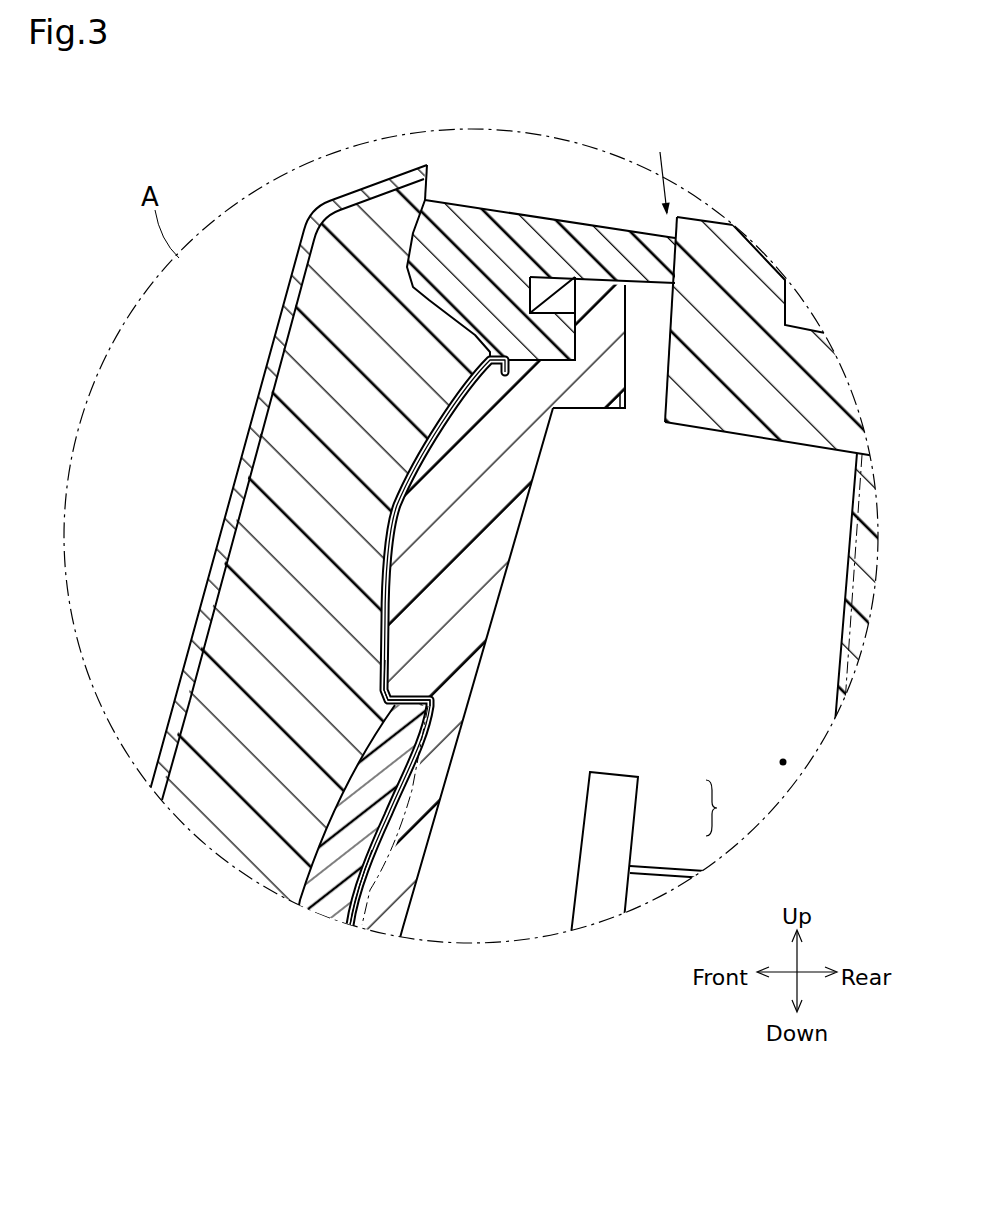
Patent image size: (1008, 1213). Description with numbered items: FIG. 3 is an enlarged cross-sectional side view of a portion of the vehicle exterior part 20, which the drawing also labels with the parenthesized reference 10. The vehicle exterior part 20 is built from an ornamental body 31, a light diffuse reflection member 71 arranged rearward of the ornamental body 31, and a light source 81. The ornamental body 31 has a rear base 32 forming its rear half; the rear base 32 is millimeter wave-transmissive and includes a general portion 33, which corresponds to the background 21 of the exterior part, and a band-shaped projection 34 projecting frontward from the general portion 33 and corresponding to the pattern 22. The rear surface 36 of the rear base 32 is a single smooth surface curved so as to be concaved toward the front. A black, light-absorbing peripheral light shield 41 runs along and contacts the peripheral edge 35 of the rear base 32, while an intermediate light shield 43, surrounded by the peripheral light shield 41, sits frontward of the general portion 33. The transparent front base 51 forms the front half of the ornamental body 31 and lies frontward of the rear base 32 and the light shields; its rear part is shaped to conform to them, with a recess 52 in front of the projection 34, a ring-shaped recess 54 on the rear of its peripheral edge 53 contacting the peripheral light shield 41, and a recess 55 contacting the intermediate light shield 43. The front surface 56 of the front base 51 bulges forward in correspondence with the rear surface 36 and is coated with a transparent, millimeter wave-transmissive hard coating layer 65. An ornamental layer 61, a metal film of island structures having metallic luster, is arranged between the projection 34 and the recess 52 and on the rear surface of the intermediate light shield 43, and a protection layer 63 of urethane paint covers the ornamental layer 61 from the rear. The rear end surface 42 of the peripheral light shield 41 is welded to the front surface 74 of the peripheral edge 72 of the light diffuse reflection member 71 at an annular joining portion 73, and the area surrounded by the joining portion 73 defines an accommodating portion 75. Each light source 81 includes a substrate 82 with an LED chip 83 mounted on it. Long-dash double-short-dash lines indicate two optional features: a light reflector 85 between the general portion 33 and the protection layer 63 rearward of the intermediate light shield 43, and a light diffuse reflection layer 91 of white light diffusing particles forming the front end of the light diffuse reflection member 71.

The vehicle door 10 is at (471, 536).
The vehicle exterior part 20 is at (247, 238).
The background 21 is at (390, 925).
The pattern 22 is at (385, 663).
The ornamental body 31 is at (518, 604).
The rear base 32 is at (487, 645).
The general portion 33 is at (380, 934).
The projection 34 is at (351, 681).
The peripheral edge 35 is at (580, 293).
The rear surface 36 is at (415, 920).
The peripheral light shield 41 is at (510, 228).
The rear end surface 42 is at (681, 260).
The intermediate light shield 43 is at (330, 900).
The front base 51 is at (248, 497).
The recess 52 is at (372, 592).
The peripheral edge 53 is at (395, 185).
The ring-shaped recess 54 is at (420, 222).
The recess 55 is at (328, 798).
The front surface 56 is at (153, 755).
The ornamental layer 61 is at (381, 545).
The protection layer 63 is at (390, 547).
The hard coating layer 65 is at (272, 352).
The light diffuse reflection member 71 is at (835, 372).
The peripheral edge 72 is at (748, 250).
The joining portion 73 is at (655, 170).
The front surface 74 is at (664, 422).
The accommodating portion 75 is at (786, 762).
The light source 81 is at (660, 866).
The substrate 82 is at (640, 790).
The LED chip 83 is at (672, 866).
The light reflector 85 is at (445, 752).
The light diffuse reflection layer 91 is at (840, 577).